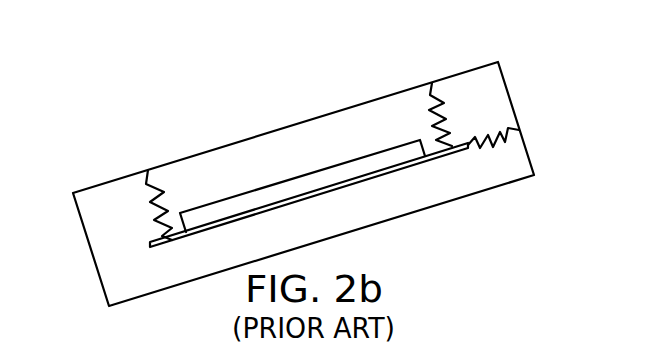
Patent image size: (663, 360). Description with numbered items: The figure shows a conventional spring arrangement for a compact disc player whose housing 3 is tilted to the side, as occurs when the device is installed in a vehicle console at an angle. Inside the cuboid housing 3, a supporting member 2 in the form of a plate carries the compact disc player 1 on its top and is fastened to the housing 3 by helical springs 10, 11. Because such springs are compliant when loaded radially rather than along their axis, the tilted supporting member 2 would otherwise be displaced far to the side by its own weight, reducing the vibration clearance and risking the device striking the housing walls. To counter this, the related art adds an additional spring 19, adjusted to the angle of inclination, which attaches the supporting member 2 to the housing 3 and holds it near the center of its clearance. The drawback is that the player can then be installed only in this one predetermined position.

The compact disc player 1 is at (297, 187).
The supporting member 2 is at (367, 182).
The housing 3 is at (492, 188).
The helical spring 10 is at (148, 170).
The helical spring 11 is at (440, 112).
The additional spring 19 is at (486, 130).